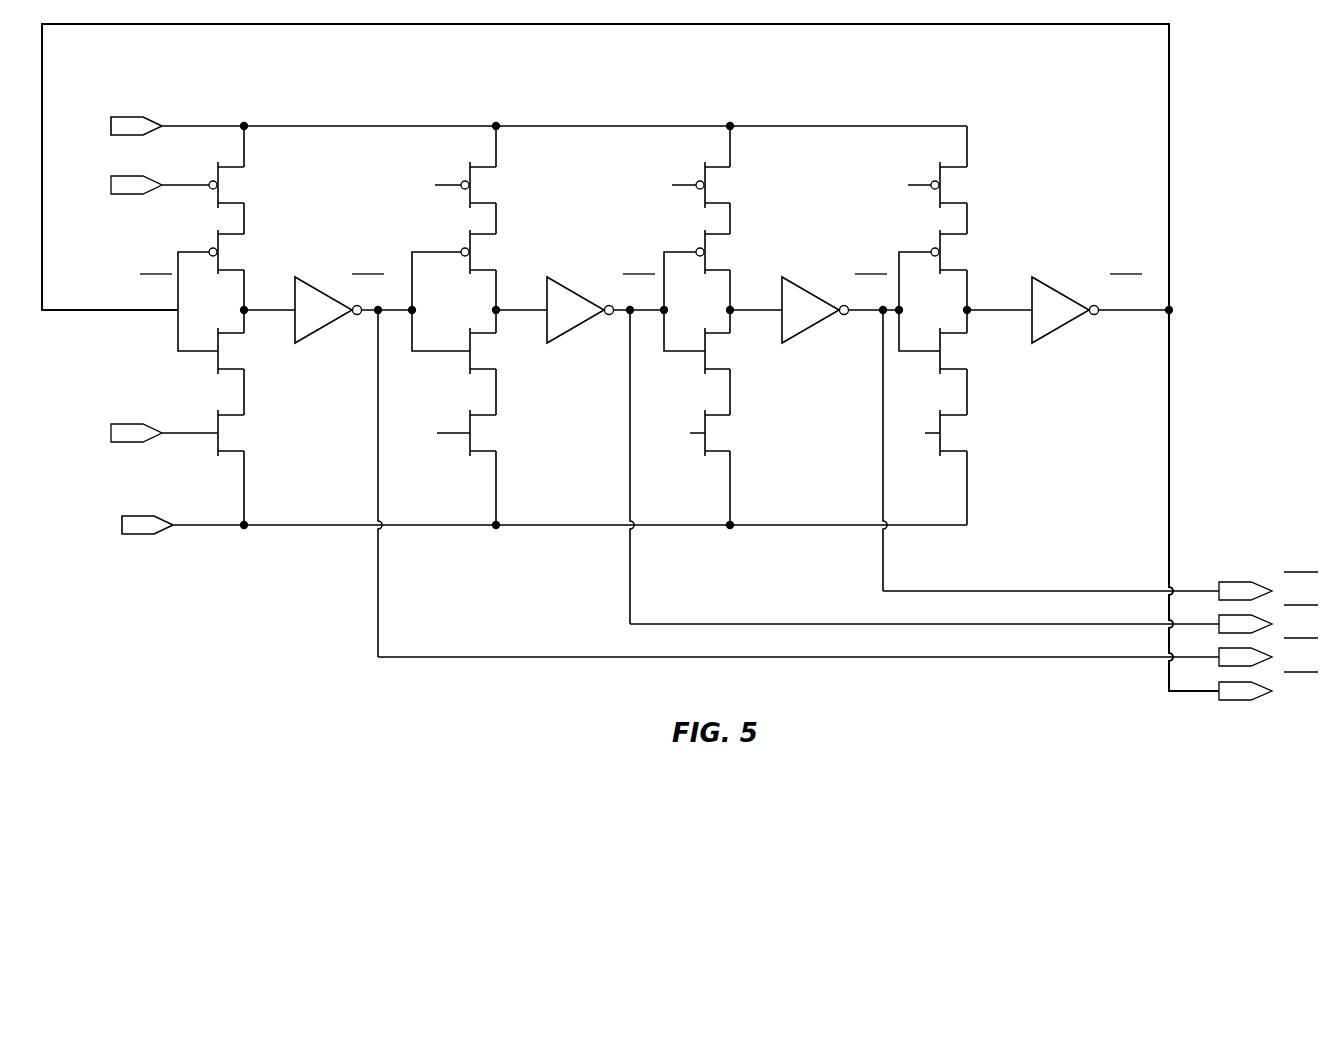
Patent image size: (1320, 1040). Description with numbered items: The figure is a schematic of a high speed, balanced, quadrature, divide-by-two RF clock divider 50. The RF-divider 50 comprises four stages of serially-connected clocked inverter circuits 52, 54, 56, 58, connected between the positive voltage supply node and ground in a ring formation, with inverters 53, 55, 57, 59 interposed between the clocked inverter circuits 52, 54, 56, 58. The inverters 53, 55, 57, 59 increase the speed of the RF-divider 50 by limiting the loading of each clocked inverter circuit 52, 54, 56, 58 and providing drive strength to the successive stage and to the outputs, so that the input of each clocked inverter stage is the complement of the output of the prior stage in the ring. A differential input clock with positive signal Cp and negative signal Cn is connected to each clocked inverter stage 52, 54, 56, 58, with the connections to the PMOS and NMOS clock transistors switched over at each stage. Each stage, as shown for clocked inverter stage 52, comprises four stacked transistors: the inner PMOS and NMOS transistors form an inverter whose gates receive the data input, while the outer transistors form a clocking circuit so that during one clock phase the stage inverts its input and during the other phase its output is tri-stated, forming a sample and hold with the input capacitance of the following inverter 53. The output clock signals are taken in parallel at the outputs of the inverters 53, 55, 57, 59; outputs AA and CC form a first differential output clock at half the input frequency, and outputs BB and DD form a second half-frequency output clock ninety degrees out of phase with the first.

The divide-by-two RF clock divider 50 is at (1054, 131).
The clocked inverter circuit 52 is at (294, 202).
The inverter 53 is at (330, 320).
The clocked inverter circuit 54 is at (527, 202).
The inverter 55 is at (580, 320).
The clocked inverter circuit 56 is at (757, 194).
The inverter 57 is at (815, 320).
The clocked inverter circuit 58 is at (858, 393).
The inverter 59 is at (1065, 320).